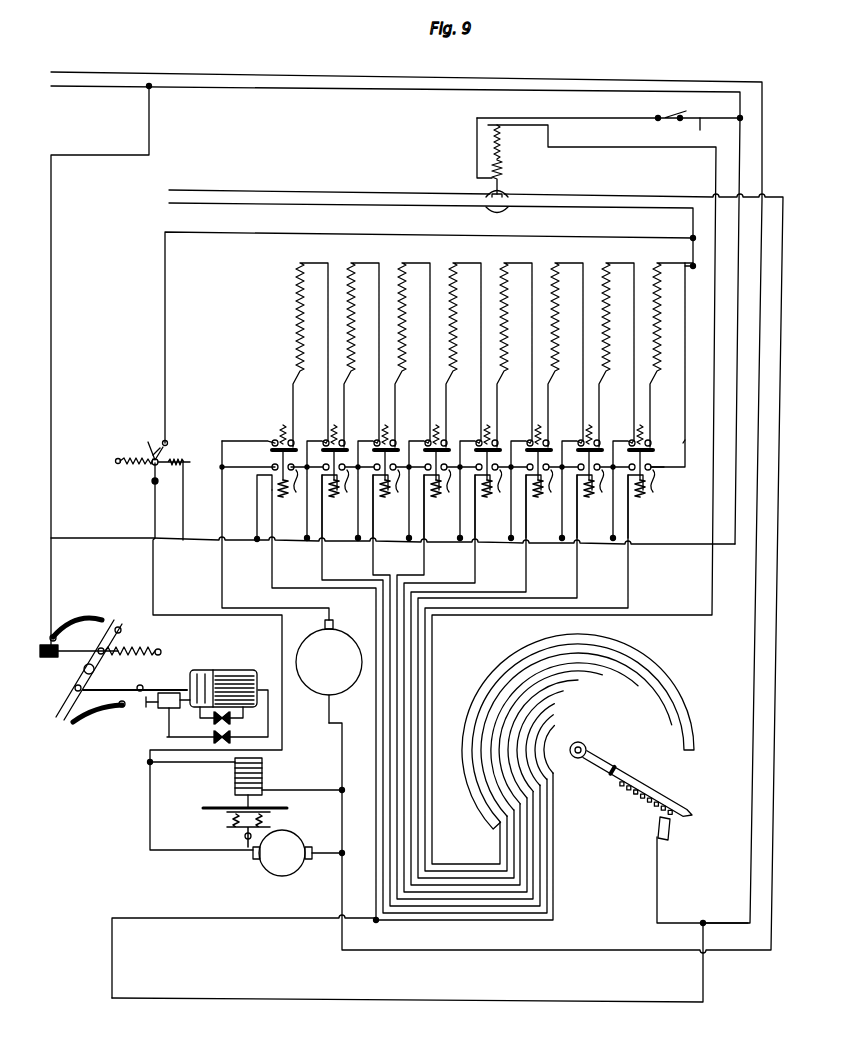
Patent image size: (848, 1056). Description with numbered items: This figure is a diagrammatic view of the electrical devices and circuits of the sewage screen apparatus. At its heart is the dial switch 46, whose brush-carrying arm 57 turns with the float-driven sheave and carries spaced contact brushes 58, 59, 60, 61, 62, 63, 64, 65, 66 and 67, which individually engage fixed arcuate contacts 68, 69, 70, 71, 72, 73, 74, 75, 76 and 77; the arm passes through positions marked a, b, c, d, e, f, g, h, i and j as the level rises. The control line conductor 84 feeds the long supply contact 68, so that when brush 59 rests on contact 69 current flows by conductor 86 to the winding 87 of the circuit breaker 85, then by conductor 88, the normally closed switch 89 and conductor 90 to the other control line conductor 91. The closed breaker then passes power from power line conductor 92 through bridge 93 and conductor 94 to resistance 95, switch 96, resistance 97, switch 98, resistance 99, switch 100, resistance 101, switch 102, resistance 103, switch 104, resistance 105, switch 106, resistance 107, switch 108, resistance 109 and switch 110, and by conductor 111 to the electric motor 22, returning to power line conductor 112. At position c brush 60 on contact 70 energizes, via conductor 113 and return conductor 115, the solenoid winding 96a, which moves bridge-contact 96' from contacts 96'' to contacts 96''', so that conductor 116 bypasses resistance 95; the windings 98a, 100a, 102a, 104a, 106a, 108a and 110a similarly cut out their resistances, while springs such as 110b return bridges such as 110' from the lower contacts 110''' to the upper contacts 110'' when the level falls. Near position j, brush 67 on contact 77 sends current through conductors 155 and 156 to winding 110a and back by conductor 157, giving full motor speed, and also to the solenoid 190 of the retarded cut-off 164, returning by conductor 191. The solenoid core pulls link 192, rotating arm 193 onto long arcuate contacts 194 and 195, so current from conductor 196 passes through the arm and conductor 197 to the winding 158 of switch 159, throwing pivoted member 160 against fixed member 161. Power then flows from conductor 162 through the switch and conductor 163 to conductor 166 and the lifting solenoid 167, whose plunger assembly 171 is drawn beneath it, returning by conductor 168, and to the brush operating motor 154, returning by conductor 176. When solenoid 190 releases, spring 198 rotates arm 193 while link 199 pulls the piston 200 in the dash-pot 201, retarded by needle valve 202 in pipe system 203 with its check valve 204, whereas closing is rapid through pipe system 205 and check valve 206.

The electric motor 22 is at (336, 690).
The dial switch 46 is at (702, 738).
The brush-carrying arm 57 is at (692, 810).
The contact brush 58 is at (680, 830).
The contact brush 59 is at (666, 832).
The contact brush 60 is at (656, 818).
The contact brush 61 is at (658, 804).
The contact brush 62 is at (642, 805).
The contact brush 63 is at (644, 790).
The contact brush 64 is at (628, 796).
The contact brush 65 is at (628, 782).
The contact brush 66 is at (614, 784).
The contact brush 67 is at (610, 766).
The fixed arcuate contact 68 is at (688, 792).
The fixed arcuate contact 69 is at (678, 728).
The fixed arcuate contact 70 is at (644, 688).
The fixed arcuate contact 71 is at (604, 676).
The fixed arcuate contact 72 is at (578, 680).
The fixed arcuate contact 73 is at (564, 692).
The fixed arcuate contact 74 is at (556, 704).
The fixed arcuate contact 75 is at (553, 714).
The fixed arcuate contact 76 is at (554, 726).
The fixed arcuate contact 77 is at (568, 758).
The control line conductor 84 is at (248, 72).
The circuit breaker 85 is at (517, 192).
The conductor 86 is at (622, 146).
The solenoid winding 87 is at (503, 166).
The conductor 88 is at (475, 136).
The switch 89 is at (668, 122).
The conductor 90 is at (698, 120).
The control line conductor 91 is at (244, 94).
The power line conductor 92 is at (221, 204).
The bridge 93 is at (494, 220).
The conductor 94 is at (688, 268).
The resistance 95 is at (667, 365).
The switch 96 is at (644, 471).
The bridge-contact 96' is at (667, 457).
The switch contacts 96'' is at (675, 435).
The switch contacts 96''' is at (674, 487).
The solenoid winding 96a is at (646, 500).
The resistance 97 is at (616, 355).
The switch 98 is at (598, 427).
The solenoid winding 98a is at (592, 508).
The resistance 99 is at (565, 355).
The switch 100 is at (547, 427).
The solenoid winding 100a is at (545, 508).
The resistance 101 is at (514, 355).
The switch 102 is at (496, 427).
The solenoid winding 102a is at (494, 508).
The resistance 103 is at (463, 355).
The switch 104 is at (445, 427).
The solenoid winding 104a is at (443, 508).
The resistance 105 is at (412, 355).
The switch 106 is at (394, 427).
The solenoid winding 106a is at (392, 508).
The resistance 107 is at (361, 355).
The switch 108 is at (343, 427).
The solenoid winding 108a is at (341, 508).
The resistance 109 is at (310, 355).
The switch 110 is at (273, 470).
The switch bridge 110' is at (266, 428).
The upper switch contacts 110'' is at (313, 428).
The lower switch contacts 110''' is at (248, 455).
The solenoid winding 110a is at (292, 508).
The switch spring 110b is at (274, 422).
The conductor 111 is at (244, 414).
The power line conductor 112 is at (278, 190).
The conductor 113 is at (632, 576).
The conductor 115 is at (598, 550).
The conductor 116 is at (621, 437).
The brush operating motor 154 is at (271, 878).
The conductor 155 is at (206, 922).
The conductor 156 is at (272, 565).
The conductor 157 is at (258, 522).
The solenoid winding 158 is at (180, 460).
The switch 159 is at (169, 451).
The pivoted switch member 160 is at (146, 472).
The fixed switch member 161 is at (185, 428).
The conductor 162 is at (168, 288).
The conductor 163 is at (150, 522).
The retarded cut-off 164 is at (107, 681).
The conductor 166 is at (156, 772).
The lifting solenoid 167 is at (235, 780).
The conductor 168 is at (322, 793).
The valve 171 is at (225, 832).
The conductor 176 is at (332, 878).
The solenoid 190 is at (54, 652).
The conductor 191 is at (52, 422).
The link 192 is at (85, 642).
The switch arm 193 is at (135, 635).
The fixed arcuate contact 194 is at (98, 606).
The fixed arcuate contact 195 is at (111, 718).
The conductor 196 is at (706, 978).
The conductor 197 is at (72, 528).
The spring 198 is at (155, 650).
The link 199 is at (116, 694).
The piston 200 is at (205, 672).
The dash-pot 201 is at (248, 669).
The needle valve 202 is at (161, 710).
The pipe system 203 is at (165, 732).
The check valve 204 is at (204, 758).
The pipe system 205 is at (252, 716).
The check valve 206 is at (242, 734).
The position a is at (694, 828).
The position b is at (703, 746).
The position c is at (666, 672).
The position d is at (612, 630).
The position e is at (566, 623).
The position f is at (530, 625).
The position g is at (520, 654).
The position h is at (495, 672).
The position i is at (476, 696).
The position j is at (462, 790).